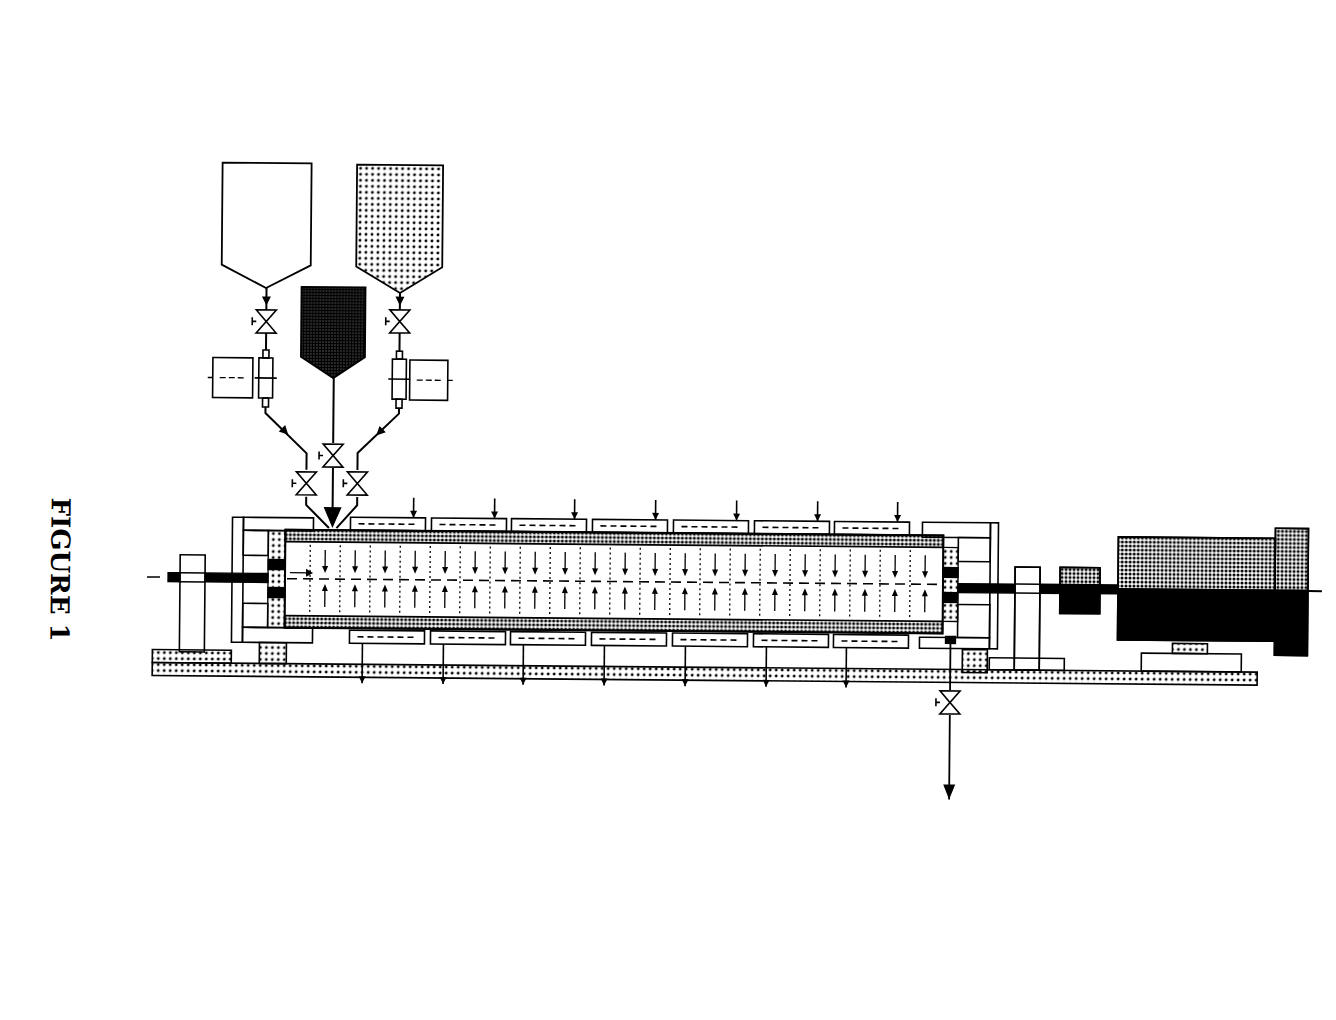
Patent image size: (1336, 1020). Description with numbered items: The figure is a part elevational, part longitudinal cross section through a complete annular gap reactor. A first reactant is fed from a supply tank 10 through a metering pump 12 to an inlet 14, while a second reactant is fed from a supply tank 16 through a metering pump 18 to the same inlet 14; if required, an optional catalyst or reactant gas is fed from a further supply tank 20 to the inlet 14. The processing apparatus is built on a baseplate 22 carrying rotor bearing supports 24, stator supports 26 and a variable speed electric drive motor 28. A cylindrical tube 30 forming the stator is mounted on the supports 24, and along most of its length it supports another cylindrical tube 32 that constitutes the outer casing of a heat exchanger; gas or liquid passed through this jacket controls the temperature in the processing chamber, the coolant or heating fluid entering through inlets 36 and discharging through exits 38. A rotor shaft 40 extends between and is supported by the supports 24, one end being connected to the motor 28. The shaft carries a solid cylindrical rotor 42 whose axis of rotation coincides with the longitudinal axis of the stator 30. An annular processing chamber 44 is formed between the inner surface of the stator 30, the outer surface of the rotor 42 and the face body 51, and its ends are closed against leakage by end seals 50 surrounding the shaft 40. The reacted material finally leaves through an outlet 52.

The supply tank 10 is at (277, 193).
The metering pump 12 is at (231, 372).
The inlet 14 is at (326, 531).
The supply tank 16 is at (424, 231).
The metering pump 18 is at (431, 379).
The supply tank 20 is at (336, 341).
The baseplate 22 is at (553, 671).
The rotor bearing supports 24 is at (180, 621).
The stator supports 26 is at (275, 660).
The variable speed electric drive motor 28 is at (1183, 553).
The cylindrical tube 30 is at (331, 633).
The cylindrical tube 32 is at (387, 646).
The inlets 36 is at (896, 515).
The exits 38 is at (842, 649).
The rotor shaft 40 is at (1003, 574).
The cylindrical rotor 42 is at (917, 536).
The processing chamber 44 is at (475, 642).
The end seals 50 is at (962, 604).
The face body 51 is at (249, 547).
The outlet 52 is at (942, 703).